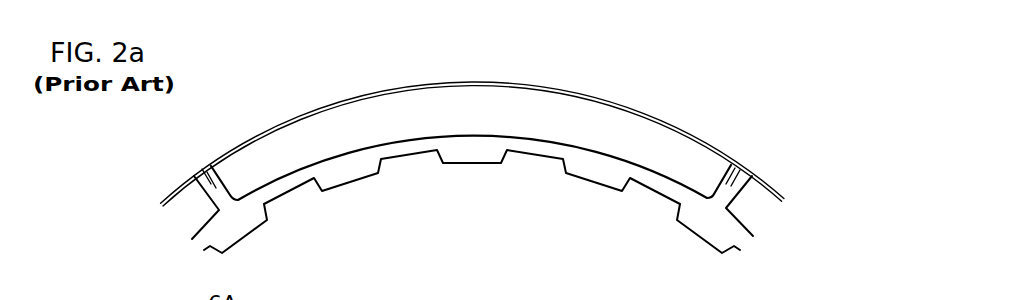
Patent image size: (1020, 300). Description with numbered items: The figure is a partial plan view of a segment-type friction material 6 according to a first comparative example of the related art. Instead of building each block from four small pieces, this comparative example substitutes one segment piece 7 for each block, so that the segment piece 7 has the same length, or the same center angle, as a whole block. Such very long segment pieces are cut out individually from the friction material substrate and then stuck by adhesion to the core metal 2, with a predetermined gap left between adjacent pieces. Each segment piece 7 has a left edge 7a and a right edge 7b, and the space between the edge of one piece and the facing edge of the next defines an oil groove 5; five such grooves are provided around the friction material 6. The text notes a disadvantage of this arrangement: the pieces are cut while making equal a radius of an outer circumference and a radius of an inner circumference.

The core metal 2 is at (463, 152).
The oil groove 5 is at (211, 171).
The segment-type friction material 6 is at (257, 102).
The segment piece 7 is at (172, 200).
The left edge 7a is at (204, 167).
The right edge 7b is at (741, 164).